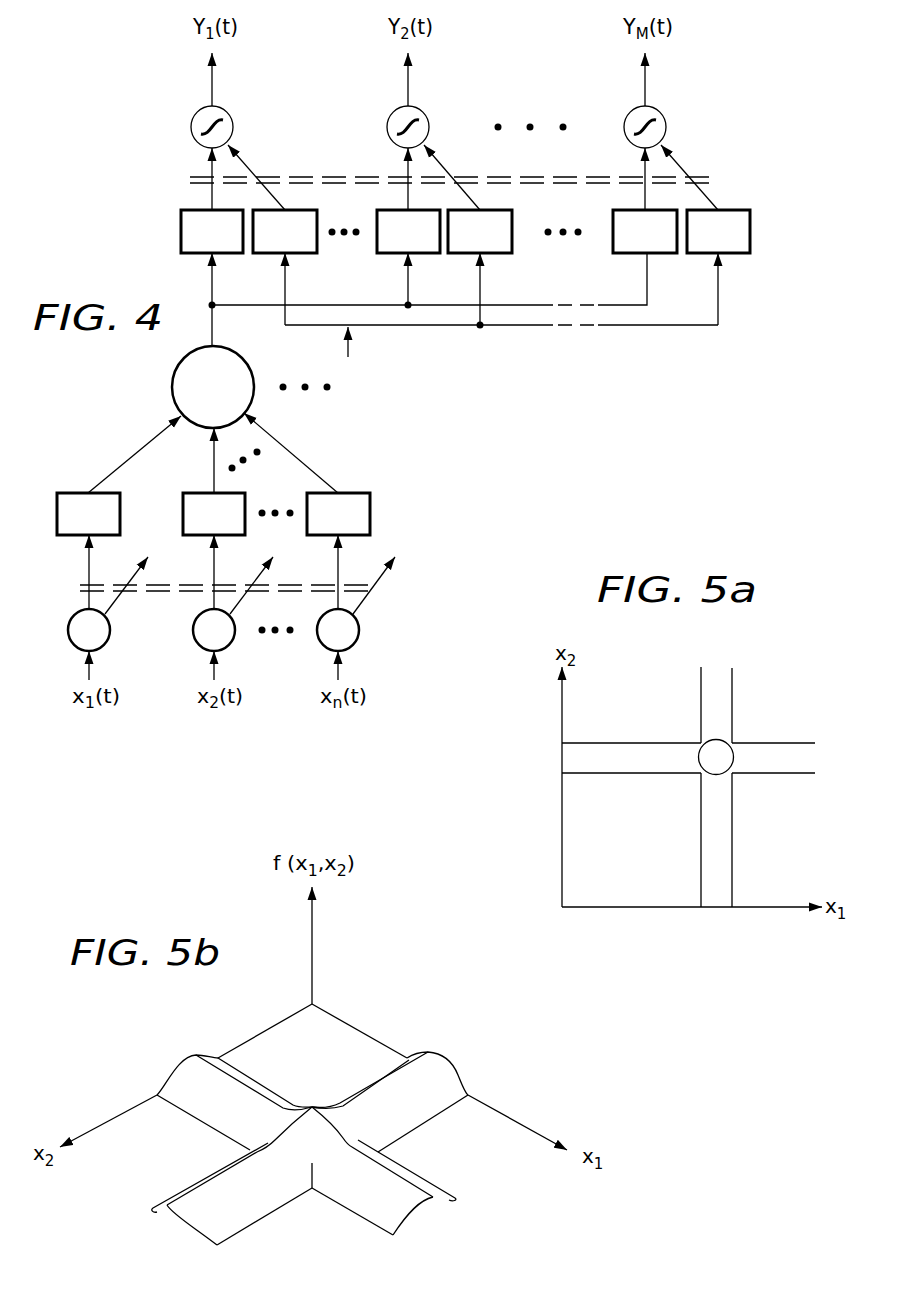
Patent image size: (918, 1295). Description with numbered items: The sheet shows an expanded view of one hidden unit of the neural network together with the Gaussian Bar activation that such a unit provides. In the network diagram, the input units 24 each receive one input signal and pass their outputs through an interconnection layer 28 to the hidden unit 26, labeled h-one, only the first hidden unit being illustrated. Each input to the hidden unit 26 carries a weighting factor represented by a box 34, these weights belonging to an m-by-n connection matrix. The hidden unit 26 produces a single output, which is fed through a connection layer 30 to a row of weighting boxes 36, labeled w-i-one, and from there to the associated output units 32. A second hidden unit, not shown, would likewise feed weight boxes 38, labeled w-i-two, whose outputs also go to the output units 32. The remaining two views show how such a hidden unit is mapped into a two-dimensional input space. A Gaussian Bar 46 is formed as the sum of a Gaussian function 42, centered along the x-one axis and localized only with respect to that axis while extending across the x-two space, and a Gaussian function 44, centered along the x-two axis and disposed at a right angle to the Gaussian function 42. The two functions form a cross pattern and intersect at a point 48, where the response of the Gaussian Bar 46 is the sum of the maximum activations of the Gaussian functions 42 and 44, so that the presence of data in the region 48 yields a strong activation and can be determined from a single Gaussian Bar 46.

In FIG. 4, the input units 24 is at (73, 641).
In FIG. 4, the hidden unit 26 is at (172, 383).
In FIG. 4, the interconnection layer 28 is at (378, 588).
In FIG. 4, the connection layer 30 is at (700, 180).
In FIG. 4, the output units 32 is at (191, 124).
In FIG. 4, the weighting factor boxes 34 is at (78, 491).
In FIG. 4, the weighting boxes 36 is at (181, 229).
In FIG. 4, the weight boxes 38 is at (750, 229).
In FIG. 5A, the Gaussian function 42 is at (733, 838).
In FIG. 5B, the Gaussian function 42 is at (435, 1052).
In FIG. 5A, the Gaussian function 44 is at (776, 742).
In FIG. 5B, the Gaussian function 44 is at (175, 1062).
In FIG. 5A, the Gaussian Bar 46 is at (700, 822).
In FIG. 5B, the Gaussian Bar 46 is at (342, 1206).
In FIG. 5A, the intersection point 48 is at (700, 742).
In FIG. 5B, the intersection point 48 is at (311, 1107).